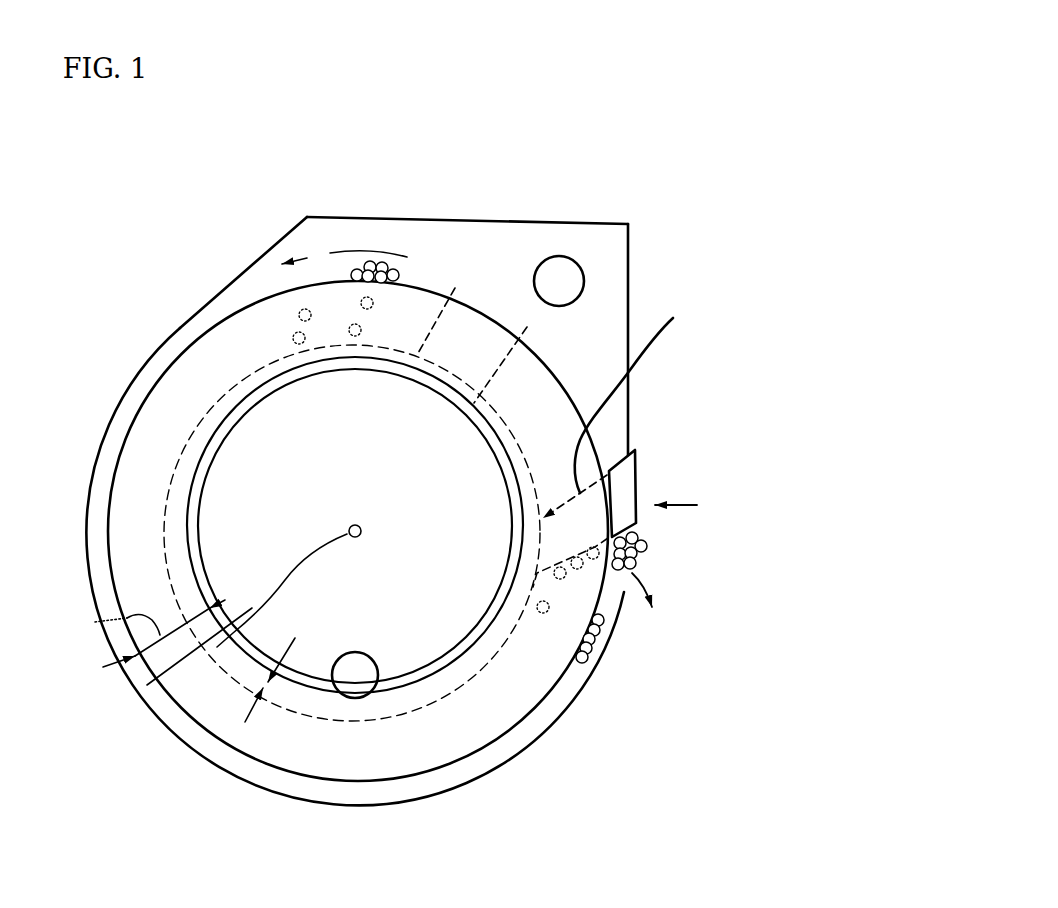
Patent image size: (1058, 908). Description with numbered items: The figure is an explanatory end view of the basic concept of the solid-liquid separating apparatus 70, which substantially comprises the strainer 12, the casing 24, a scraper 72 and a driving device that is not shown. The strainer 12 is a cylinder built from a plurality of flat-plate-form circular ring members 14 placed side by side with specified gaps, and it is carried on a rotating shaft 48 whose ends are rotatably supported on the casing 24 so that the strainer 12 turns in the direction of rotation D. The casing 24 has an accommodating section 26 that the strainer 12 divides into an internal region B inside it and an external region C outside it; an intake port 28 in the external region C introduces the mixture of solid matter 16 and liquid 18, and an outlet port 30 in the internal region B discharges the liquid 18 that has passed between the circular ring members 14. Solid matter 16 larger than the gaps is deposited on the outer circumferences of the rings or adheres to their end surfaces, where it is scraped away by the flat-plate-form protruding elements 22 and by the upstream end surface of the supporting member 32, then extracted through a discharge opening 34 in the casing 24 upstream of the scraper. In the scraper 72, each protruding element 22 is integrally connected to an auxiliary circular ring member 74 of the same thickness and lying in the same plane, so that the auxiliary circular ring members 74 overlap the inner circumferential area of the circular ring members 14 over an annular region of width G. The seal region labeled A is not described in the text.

The strainer 12 is at (341, 511).
The circular ring members 14 is at (321, 531).
The solid matter 16 is at (410, 273).
The liquid 18 is at (359, 423).
The flat-plate-form protruding elements 22 is at (673, 318).
The casing 24 is at (467, 172).
The accommodating section 26 is at (537, 248).
The intake port 28 is at (636, 255).
The outlet port 30 is at (471, 705).
The supporting member 32 is at (637, 487).
The discharge opening 34 is at (671, 628).
The rotating shaft 48 is at (159, 667).
The solid-liquid separating apparatus 70 is at (699, 92).
The scraper 72 is at (686, 446).
The auxiliary circular ring member 74 is at (599, 663).
The seal portion A is at (88, 630).
The internal region B is at (337, 604).
The external region C is at (510, 271).
The direction of rotation D is at (326, 200).
The width of annular region G is at (213, 742).